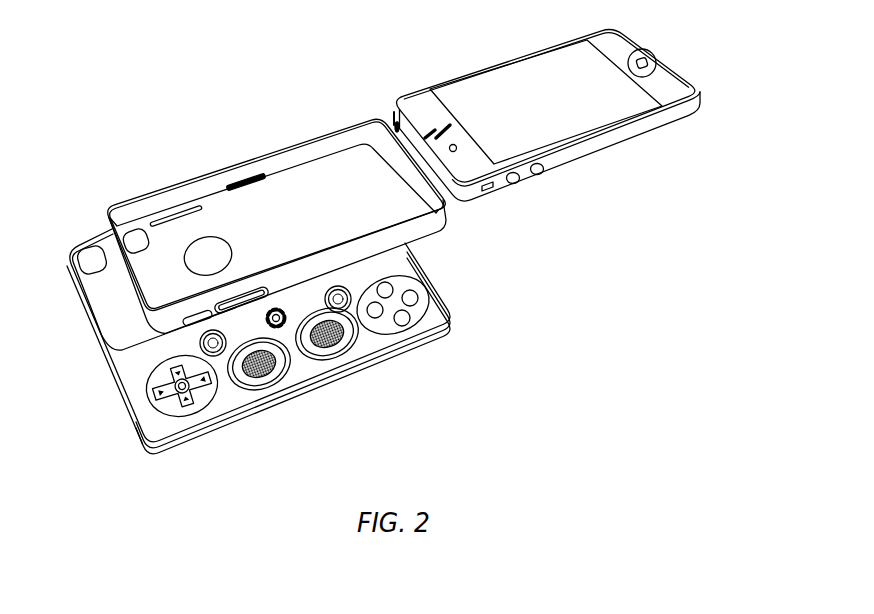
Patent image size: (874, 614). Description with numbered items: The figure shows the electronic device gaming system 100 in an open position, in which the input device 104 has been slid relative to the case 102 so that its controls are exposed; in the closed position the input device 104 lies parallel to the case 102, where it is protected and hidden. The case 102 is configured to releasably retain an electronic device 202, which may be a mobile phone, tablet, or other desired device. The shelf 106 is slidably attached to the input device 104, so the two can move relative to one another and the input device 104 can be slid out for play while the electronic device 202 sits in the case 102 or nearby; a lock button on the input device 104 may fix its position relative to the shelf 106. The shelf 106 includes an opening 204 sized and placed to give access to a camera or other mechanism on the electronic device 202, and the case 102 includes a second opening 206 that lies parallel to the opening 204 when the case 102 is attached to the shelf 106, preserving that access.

The electronic device gaming system 100 is at (116, 56).
The case 102 is at (198, 188).
The input device 104 is at (437, 322).
The shelf 106 is at (105, 315).
The electronic device 202 is at (660, 87).
The opening 204 is at (83, 255).
The second opening 206 is at (131, 234).